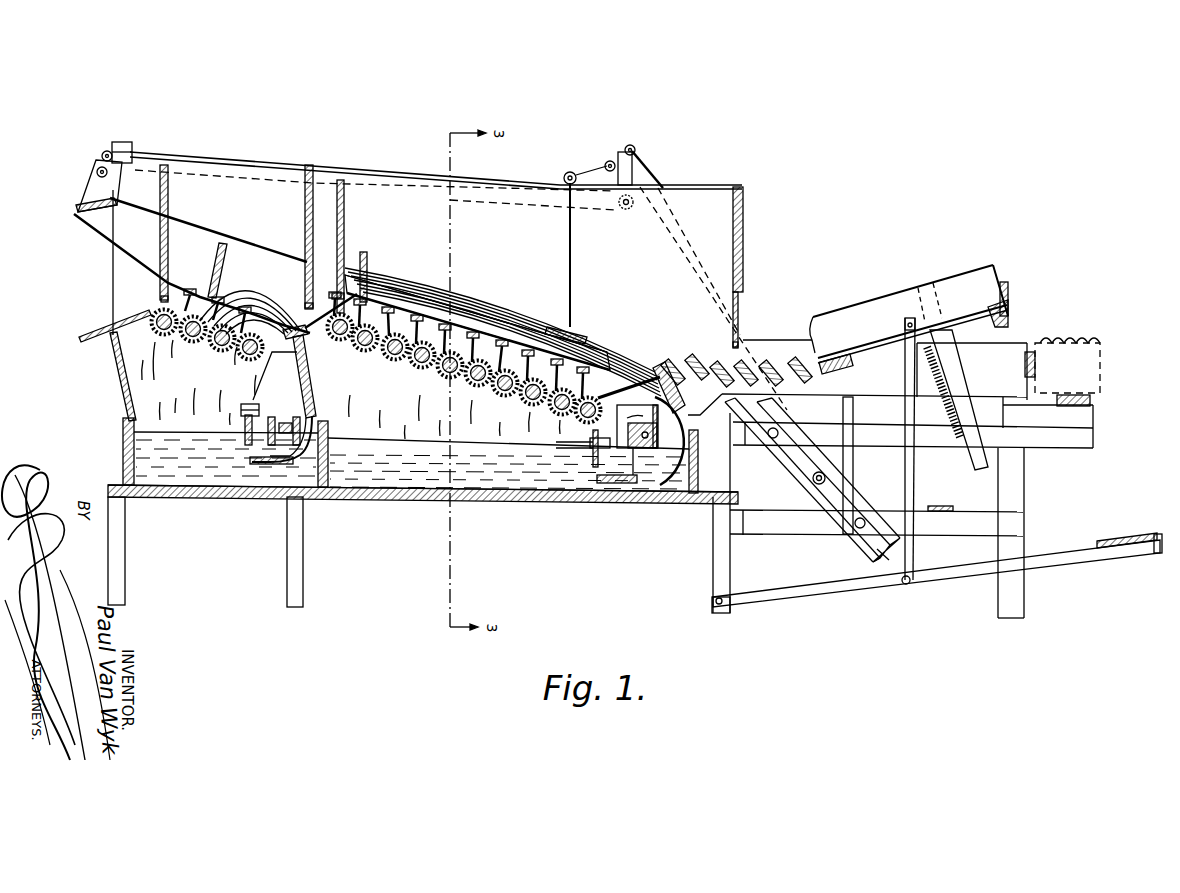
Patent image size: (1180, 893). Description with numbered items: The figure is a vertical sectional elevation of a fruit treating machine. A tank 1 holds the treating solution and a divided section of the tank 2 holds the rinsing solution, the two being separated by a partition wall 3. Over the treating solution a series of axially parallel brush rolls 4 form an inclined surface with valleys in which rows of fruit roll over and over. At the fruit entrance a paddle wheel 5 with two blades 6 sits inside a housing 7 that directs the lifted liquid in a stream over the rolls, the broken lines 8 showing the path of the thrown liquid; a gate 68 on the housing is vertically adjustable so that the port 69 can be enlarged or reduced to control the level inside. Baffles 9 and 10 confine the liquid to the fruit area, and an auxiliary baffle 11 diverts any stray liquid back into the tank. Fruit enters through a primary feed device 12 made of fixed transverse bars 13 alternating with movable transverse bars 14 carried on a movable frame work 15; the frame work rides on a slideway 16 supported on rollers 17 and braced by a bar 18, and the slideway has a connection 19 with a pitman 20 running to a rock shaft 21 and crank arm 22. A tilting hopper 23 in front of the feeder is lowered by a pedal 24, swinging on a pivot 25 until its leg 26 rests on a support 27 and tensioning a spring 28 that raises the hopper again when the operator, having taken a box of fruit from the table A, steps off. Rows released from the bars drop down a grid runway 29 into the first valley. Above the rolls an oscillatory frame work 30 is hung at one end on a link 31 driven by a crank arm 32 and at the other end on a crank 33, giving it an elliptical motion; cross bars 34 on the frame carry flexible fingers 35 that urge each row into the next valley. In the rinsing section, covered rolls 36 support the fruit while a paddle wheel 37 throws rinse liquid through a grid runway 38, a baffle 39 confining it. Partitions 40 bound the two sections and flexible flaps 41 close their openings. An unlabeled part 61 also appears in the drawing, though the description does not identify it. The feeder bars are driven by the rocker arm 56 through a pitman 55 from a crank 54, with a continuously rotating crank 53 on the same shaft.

The tank 1 is at (578, 500).
The divided section of the tank 2 is at (236, 497).
The partition wall 3 is at (324, 482).
The brush rolls 4 is at (457, 380).
The paddle wheel 5 is at (646, 450).
The blades 6 is at (596, 470).
The housing 7 is at (675, 490).
The broken lines 8 is at (590, 332).
The baffle 9 is at (432, 297).
The baffle 10 is at (367, 258).
The auxiliary baffle 11 is at (344, 222).
The primary feed device 12 is at (772, 360).
The transverse bars 13 is at (722, 362).
The transverse bars 14 is at (672, 360).
The movable frame work 15 is at (687, 388).
The slideway 16 is at (785, 460).
The rollers 17 is at (768, 440).
The bar 18 is at (849, 460).
The connection 19 is at (813, 484).
The pitman 20 is at (757, 324).
The rock shaft 21 is at (612, 160).
The crank arm 22 is at (633, 146).
The tilting hopper 23 is at (909, 314).
The pedal 24 is at (1130, 540).
The pivot 25 is at (822, 360).
The leg 26 is at (955, 380).
The support 27 is at (945, 507).
The spring 28 is at (950, 408).
The grid runway 29 is at (613, 357).
The oscillatory frame work 30 is at (192, 262).
The link 31 is at (573, 258).
The crank arm 32 is at (581, 162).
The crank 33 is at (96, 159).
The cross bars 34 is at (533, 385).
The flexible fingers 35 is at (540, 402).
The rolls 36 is at (172, 338).
The paddle wheel 37 is at (281, 414).
The grid runway 38 is at (256, 360).
The baffle 39 is at (219, 268).
The partitions 40 is at (168, 207).
The flexible flaps 41 is at (160, 299).
The crank 53 is at (82, 190).
The crank 54 is at (130, 146).
The pitman 55 is at (188, 157).
The rocker arm 56 is at (619, 205).
The bearing 61 is at (337, 296).
The gate 68 is at (588, 447).
The port 69 is at (597, 479).
The table A is at (1065, 393).